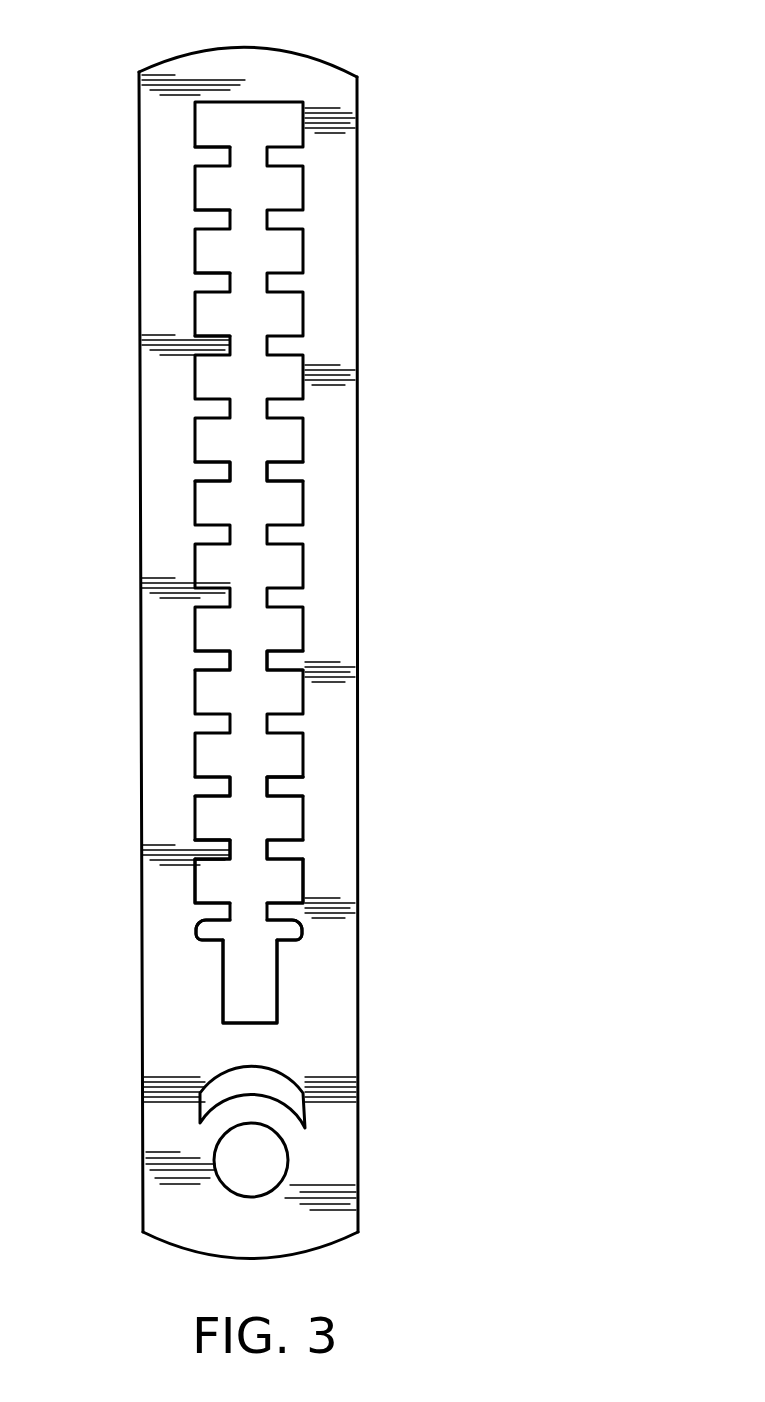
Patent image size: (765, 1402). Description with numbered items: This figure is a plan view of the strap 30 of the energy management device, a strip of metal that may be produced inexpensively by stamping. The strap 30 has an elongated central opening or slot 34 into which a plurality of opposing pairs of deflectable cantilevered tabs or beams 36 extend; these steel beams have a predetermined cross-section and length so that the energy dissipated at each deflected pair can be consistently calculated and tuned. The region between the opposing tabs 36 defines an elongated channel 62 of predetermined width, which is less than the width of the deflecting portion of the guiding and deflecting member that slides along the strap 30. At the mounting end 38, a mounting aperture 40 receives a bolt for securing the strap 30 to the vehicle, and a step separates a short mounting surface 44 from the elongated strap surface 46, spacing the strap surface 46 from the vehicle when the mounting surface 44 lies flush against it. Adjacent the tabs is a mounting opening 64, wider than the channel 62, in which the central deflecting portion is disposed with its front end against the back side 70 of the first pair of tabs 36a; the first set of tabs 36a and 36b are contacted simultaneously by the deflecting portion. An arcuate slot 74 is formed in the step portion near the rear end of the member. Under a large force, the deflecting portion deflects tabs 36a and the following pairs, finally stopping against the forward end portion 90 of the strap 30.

The strap 30 is at (425, 160).
The elongated central opening or slot 34 is at (245, 502).
The cantilevered tabs or beams 36 is at (273, 472).
The first pair of tabs 36a is at (217, 913).
The first set of tabs 36b is at (282, 848).
The mounting end 38 is at (258, 1262).
The mounting aperture 40 is at (258, 1158).
The mounting surface 44 is at (160, 1210).
The strap surface 46 is at (335, 293).
The elongated channel 62 is at (247, 337).
The mounting opening 64 is at (257, 988).
The back side of first pair of tabs 70 is at (272, 927).
The arcuate slot 74 is at (267, 1083).
The forward end portion 90 is at (245, 77).